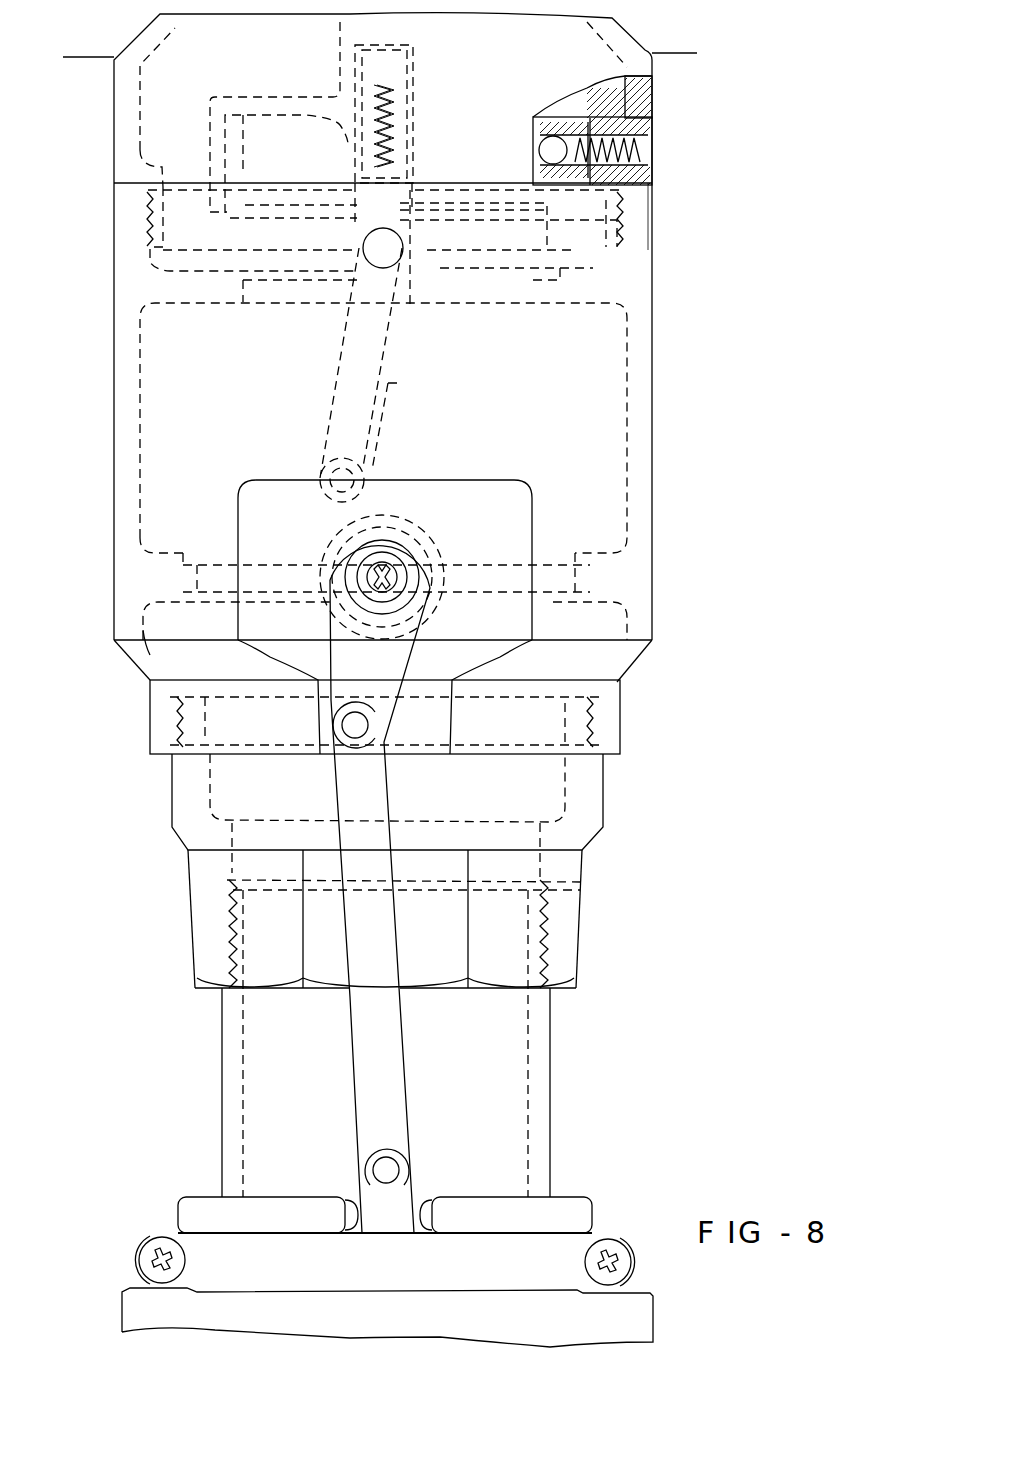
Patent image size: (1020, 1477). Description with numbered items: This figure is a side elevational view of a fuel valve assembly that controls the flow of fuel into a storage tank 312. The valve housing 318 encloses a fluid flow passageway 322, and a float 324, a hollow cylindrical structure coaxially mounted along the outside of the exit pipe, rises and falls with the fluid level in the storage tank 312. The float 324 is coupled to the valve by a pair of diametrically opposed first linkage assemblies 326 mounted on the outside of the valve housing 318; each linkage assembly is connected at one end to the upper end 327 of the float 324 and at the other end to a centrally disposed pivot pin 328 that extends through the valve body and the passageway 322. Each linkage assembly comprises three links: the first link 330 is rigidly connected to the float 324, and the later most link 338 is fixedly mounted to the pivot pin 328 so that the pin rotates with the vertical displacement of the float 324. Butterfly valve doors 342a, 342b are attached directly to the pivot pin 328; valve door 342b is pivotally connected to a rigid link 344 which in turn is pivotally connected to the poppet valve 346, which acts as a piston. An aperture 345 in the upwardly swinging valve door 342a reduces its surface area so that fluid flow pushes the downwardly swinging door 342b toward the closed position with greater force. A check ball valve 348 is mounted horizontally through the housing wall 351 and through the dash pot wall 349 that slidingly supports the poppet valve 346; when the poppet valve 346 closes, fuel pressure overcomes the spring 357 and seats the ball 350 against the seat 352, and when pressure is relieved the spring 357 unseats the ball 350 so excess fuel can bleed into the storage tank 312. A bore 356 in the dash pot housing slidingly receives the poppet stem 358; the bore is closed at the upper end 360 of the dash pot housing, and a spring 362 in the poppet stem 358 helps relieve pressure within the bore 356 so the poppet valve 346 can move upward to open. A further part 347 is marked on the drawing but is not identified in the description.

The storage tank 312 is at (117, 26).
The valve housing 318 is at (657, 367).
The passageway 322 is at (620, 437).
The float 324 is at (653, 1303).
The first linkage assembly 326 is at (398, 944).
The upper end 327 is at (563, 1197).
The pivot pin 328 is at (430, 567).
The first link 330 is at (402, 1208).
The later most link 338 is at (420, 595).
The butterfly valve door 342a is at (400, 711).
The butterfly valve door 342b is at (398, 415).
The rigid link 344 is at (385, 358).
The aperture 345 is at (385, 675).
The poppet valve 346 is at (527, 222).
The bolt 347 is at (228, 280).
The check ball valve 348 is at (653, 167).
The dash pot wall 349 is at (553, 208).
The ball 350 is at (647, 97).
The housing wall 351 is at (656, 210).
The seat 352 is at (567, 136).
The bore 356 is at (392, 90).
The spring 357 is at (645, 150).
The poppet stem 358 is at (405, 160).
The upper end 360 is at (372, 45).
The spring 362 is at (405, 117).